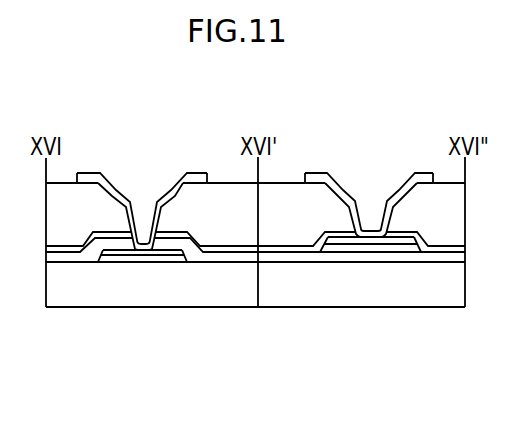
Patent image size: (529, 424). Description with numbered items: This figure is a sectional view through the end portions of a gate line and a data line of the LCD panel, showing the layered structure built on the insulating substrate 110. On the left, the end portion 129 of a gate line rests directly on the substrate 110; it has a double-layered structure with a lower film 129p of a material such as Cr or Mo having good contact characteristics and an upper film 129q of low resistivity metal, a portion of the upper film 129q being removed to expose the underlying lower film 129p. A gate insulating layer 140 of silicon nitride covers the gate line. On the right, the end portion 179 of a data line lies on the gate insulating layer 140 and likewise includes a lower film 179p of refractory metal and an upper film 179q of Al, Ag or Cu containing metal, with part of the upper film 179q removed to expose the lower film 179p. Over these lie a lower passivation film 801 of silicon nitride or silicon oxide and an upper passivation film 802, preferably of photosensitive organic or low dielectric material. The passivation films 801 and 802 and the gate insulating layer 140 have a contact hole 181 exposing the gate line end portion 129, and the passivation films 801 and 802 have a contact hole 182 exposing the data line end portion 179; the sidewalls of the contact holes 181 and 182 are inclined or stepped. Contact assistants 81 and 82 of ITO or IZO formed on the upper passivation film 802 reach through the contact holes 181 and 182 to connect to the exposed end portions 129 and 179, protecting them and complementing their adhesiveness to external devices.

The insulating substrate 110 is at (273, 289).
The gate insulating layer 140 is at (228, 255).
The lower passivation film 801 is at (58, 250).
The upper passivation film 802 is at (78, 215).
The end portion of gate line 129 is at (146, 318).
The lower film of gate line end portion 129p is at (117, 258).
The upper film of gate line end portion 129q is at (178, 253).
The end portion of data line 179 is at (369, 318).
The lower film of data line end portion 179p is at (340, 249).
The upper film of data line end portion 179q is at (395, 241).
The contact assistant 81 is at (88, 173).
The contact assistant 82 is at (317, 173).
The contact hole 181 is at (144, 210).
The contact hole 182 is at (371, 209).